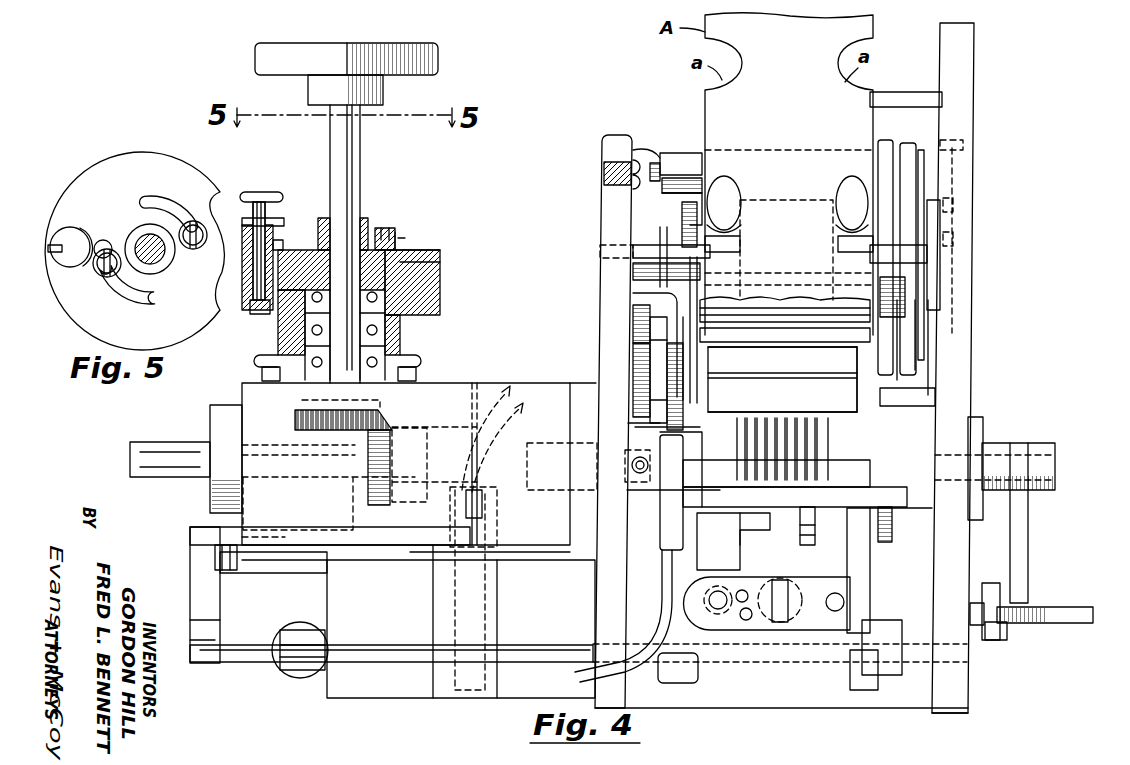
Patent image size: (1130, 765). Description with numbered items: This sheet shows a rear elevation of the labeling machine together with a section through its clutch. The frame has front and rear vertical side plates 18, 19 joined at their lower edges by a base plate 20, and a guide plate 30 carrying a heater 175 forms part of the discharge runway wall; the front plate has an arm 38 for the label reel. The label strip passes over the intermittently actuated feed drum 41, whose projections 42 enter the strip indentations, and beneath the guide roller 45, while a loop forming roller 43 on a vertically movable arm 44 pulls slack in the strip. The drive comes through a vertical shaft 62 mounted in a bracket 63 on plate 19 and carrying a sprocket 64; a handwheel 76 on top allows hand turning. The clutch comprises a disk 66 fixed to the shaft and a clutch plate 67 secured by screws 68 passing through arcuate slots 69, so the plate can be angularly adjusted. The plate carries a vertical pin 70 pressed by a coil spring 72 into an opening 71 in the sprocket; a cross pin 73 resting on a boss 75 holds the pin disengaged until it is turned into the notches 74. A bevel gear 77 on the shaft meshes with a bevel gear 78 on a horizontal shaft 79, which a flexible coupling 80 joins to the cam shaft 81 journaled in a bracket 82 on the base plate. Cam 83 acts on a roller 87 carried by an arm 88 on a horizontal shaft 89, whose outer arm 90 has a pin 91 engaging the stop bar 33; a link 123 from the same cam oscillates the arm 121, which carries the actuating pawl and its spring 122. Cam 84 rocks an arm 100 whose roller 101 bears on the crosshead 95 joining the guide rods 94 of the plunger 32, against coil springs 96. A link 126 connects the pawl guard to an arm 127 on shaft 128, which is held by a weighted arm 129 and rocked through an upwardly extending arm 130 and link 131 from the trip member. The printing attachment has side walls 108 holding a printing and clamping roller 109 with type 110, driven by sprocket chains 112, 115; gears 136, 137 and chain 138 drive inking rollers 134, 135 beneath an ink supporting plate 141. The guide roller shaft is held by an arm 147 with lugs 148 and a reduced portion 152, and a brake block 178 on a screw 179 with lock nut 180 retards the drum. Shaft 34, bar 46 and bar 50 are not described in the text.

In FIG. 4, the front vertical side plate 18 is at (952, 684).
In FIG. 4, the rear vertical side plate 19 is at (600, 165).
In FIG. 4, the base plate 20 is at (722, 709).
In FIG. 4, the guide plate 30 is at (536, 598).
In FIG. 4, the plunger 32 is at (866, 690).
In FIG. 4, the stop bar 33 is at (1005, 626).
In FIG. 4, the shaft 34 is at (1072, 607).
In FIG. 4, the arm 38 is at (976, 38).
In FIG. 4, the feed drum 41 is at (760, 146).
In FIG. 4, the projections 42 is at (722, 190).
In FIG. 4, the loop forming roller 43 is at (778, 528).
In FIG. 4, the vertically movable arm 44 is at (660, 520).
In FIG. 4, the guide roller 45 is at (784, 200).
In FIG. 4, the bar 46 is at (782, 270).
In FIG. 4, the bar 50 is at (903, 92).
In FIG. 4, the vertical shaft 62 is at (358, 166).
In FIG. 4, the bracket 63 is at (546, 380).
In FIG. 4, the sprocket 64 is at (412, 347).
In FIG. 4, the disk 66 is at (442, 276).
In FIG. 5, the clutch plate 67 is at (110, 166).
In FIG. 4, the clutch plate 67 is at (442, 254).
In FIG. 5, the screws 68 is at (112, 250).
In FIG. 4, the screws 68 is at (395, 230).
In FIG. 5, the arcuate slots 69 is at (158, 198).
In FIG. 4, the arcuate slots 69 is at (398, 248).
In FIG. 4, the vertical pin 70 is at (248, 295).
In FIG. 4, the opening 71 is at (264, 315).
In FIG. 4, the coil spring 72 is at (288, 256).
In FIG. 5, the cross pin 73 is at (60, 256).
In FIG. 4, the cross pin 73 is at (276, 220).
In FIG. 5, the notches 74 is at (56, 236).
In FIG. 4, the notches 74 is at (246, 218).
In FIG. 5, the boss 75 is at (90, 269).
In FIG. 4, the boss 75 is at (284, 242).
In FIG. 4, the handwheel 76 is at (318, 40).
In FIG. 4, the bevel gear 77 is at (300, 422).
In FIG. 4, the bevel gear 78 is at (380, 510).
In FIG. 4, the horizontal shaft 79 is at (508, 495).
In FIG. 4, the flexible coupling 80 is at (511, 439).
In FIG. 4, the cam shaft 81 is at (722, 458).
In FIG. 4, the bracket 82 is at (852, 562).
In FIG. 4, the cam 83 is at (888, 525).
In FIG. 4, the cam 84 is at (810, 536).
In FIG. 4, the roller 87 is at (935, 399).
In FIG. 4, the arm 88 is at (940, 433).
In FIG. 4, the horizontal shaft 89 is at (1058, 460).
In FIG. 4, the arm 90 is at (1030, 533).
In FIG. 4, the pin 91 is at (982, 596).
In FIG. 4, the guide rods 94 is at (720, 590).
In FIG. 4, the crosshead 95 is at (850, 610).
In FIG. 4, the coil spring 96 is at (772, 640).
In FIG. 4, the arm 100 is at (759, 529).
In FIG. 4, the roller 101 is at (780, 622).
In FIG. 4, the side walls 108 is at (700, 265).
In FIG. 4, the combined printing and clamping roller 109 is at (748, 300).
In FIG. 4, the type 110 is at (786, 300).
In FIG. 4, the sprocket chain 112 is at (682, 189).
In FIG. 4, the sprocket chain 115 is at (630, 294).
In FIG. 4, the arm 121 is at (888, 140).
In FIG. 4, the spring 122 is at (918, 130).
In FIG. 4, the link 123 is at (925, 178).
In FIG. 4, the link 126 is at (935, 371).
In FIG. 4, the arm 127 is at (878, 620).
In FIG. 4, the shaft 128 is at (246, 662).
In FIG. 4, the weighted arm 129 is at (298, 678).
In FIG. 4, the upwardly extending arm 130 is at (208, 608).
In FIG. 4, the link 131 is at (232, 567).
In FIG. 4, the inking roller 134 is at (816, 392).
In FIG. 4, the inking roller 135 is at (750, 372).
In FIG. 4, the gear 136 is at (633, 380).
In FIG. 4, the gear 137 is at (633, 328).
In FIG. 4, the sprocket chain 138 is at (753, 367).
In FIG. 4, the ink supporting plate 141 is at (776, 418).
In FIG. 4, the arm 147 is at (945, 221).
In FIG. 4, the lugs 148 is at (955, 210).
In FIG. 4, the reduced portion 152 is at (612, 254).
In FIG. 4, the heater 175 is at (455, 608).
In FIG. 4, the brake block 178 is at (670, 148).
In FIG. 4, the screw 179 is at (645, 152).
In FIG. 4, the lock nut 180 is at (640, 145).